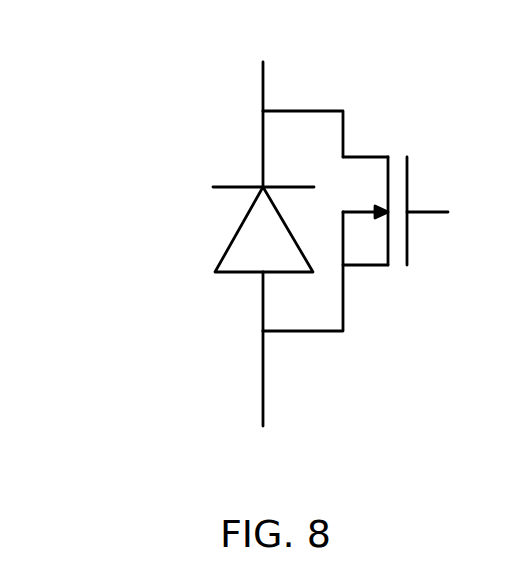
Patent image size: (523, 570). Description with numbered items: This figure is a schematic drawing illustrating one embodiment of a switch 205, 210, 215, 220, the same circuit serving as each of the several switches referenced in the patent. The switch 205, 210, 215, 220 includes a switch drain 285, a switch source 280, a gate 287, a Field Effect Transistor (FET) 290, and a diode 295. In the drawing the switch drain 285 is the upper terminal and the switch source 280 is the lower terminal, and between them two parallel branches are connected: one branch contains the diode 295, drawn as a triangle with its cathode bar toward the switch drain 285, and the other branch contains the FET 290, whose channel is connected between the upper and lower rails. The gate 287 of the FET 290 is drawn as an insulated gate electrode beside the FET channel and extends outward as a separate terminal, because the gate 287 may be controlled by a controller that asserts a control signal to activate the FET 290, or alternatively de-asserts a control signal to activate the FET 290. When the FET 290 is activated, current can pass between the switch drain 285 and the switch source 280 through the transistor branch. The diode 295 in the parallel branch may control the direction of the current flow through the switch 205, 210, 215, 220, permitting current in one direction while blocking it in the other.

The switch 205 is at (263, 232).
The switch 210 is at (263, 232).
The switch 215 is at (263, 232).
The switch 220 is at (117, 115).
The switch source 280 is at (263, 378).
The switch drain 285 is at (263, 87).
The gate 287 is at (407, 197).
The Field Effect Transistor 290 is at (362, 265).
The diode 295 is at (215, 272).